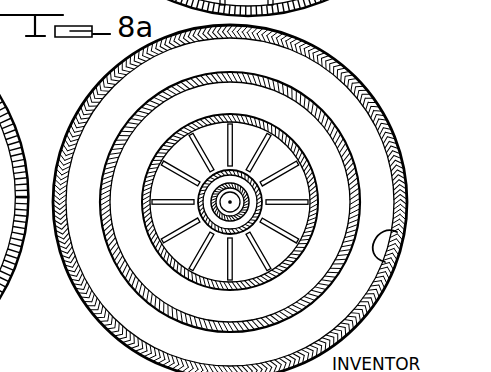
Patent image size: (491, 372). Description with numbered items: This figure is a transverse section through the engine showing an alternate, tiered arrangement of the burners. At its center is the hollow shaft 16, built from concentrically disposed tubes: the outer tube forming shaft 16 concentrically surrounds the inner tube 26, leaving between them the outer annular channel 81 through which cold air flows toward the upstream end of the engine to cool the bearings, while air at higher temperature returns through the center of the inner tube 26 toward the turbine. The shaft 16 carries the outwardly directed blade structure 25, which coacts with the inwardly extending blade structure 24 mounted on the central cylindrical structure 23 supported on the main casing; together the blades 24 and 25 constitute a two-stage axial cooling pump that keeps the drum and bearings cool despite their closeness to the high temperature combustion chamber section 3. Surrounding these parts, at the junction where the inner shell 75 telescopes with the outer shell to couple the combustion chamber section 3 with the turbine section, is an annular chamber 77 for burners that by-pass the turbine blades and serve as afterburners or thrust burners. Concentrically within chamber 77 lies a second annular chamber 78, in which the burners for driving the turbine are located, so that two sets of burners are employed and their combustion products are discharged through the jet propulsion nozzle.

The high temperature combustion chamber section 3 is at (369, 82).
The hollow shaft 16 is at (405, 166).
The central cylindrical structure 23 is at (199, 118).
The inwardly extending blade structure 24 is at (237, 145).
The outwardly directed blade structure 25 is at (183, 196).
The inner tube 26 is at (228, 208).
The inner shell 75 is at (386, 263).
The annular chamber 77 is at (95, 273).
The annular chamber 78 is at (143, 319).
The outer annular channel 81 is at (257, 192).